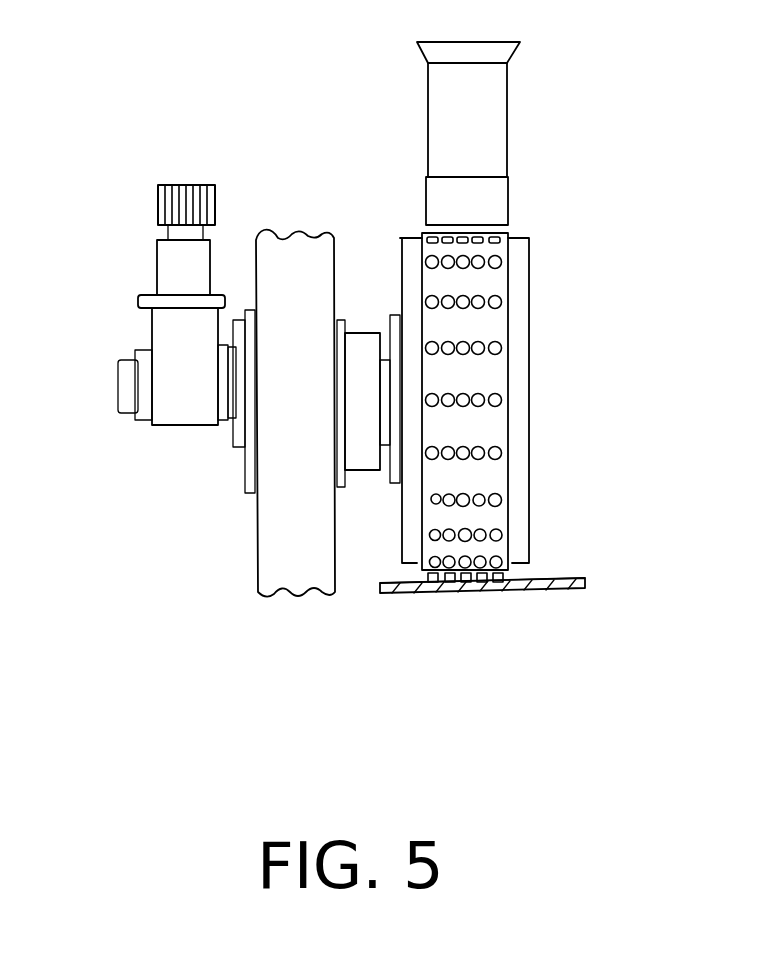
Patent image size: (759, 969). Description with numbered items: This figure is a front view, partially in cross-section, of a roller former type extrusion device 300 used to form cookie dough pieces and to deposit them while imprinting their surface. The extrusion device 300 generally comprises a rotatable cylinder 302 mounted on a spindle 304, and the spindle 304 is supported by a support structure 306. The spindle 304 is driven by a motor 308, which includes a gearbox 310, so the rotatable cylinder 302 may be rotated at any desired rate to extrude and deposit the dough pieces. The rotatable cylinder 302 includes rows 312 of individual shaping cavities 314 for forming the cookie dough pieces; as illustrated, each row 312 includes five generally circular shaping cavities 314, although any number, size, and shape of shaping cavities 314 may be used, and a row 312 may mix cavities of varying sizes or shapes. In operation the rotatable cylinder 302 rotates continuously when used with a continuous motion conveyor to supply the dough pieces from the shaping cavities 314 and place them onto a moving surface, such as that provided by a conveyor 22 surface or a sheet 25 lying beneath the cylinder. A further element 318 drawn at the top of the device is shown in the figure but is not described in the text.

The roller former type extrusion device 300 is at (532, 655).
The rotatable cylinder 302 is at (480, 323).
The spindle 304 is at (383, 327).
The support structure 306 is at (290, 540).
The motor 308 is at (178, 185).
The gearbox 310 is at (185, 385).
The rows 312 is at (507, 243).
The shaping cavities 314 is at (478, 300).
The nozzle 318 is at (468, 112).
The conveyor 22 is at (540, 593).
The sheet 25 is at (552, 582).